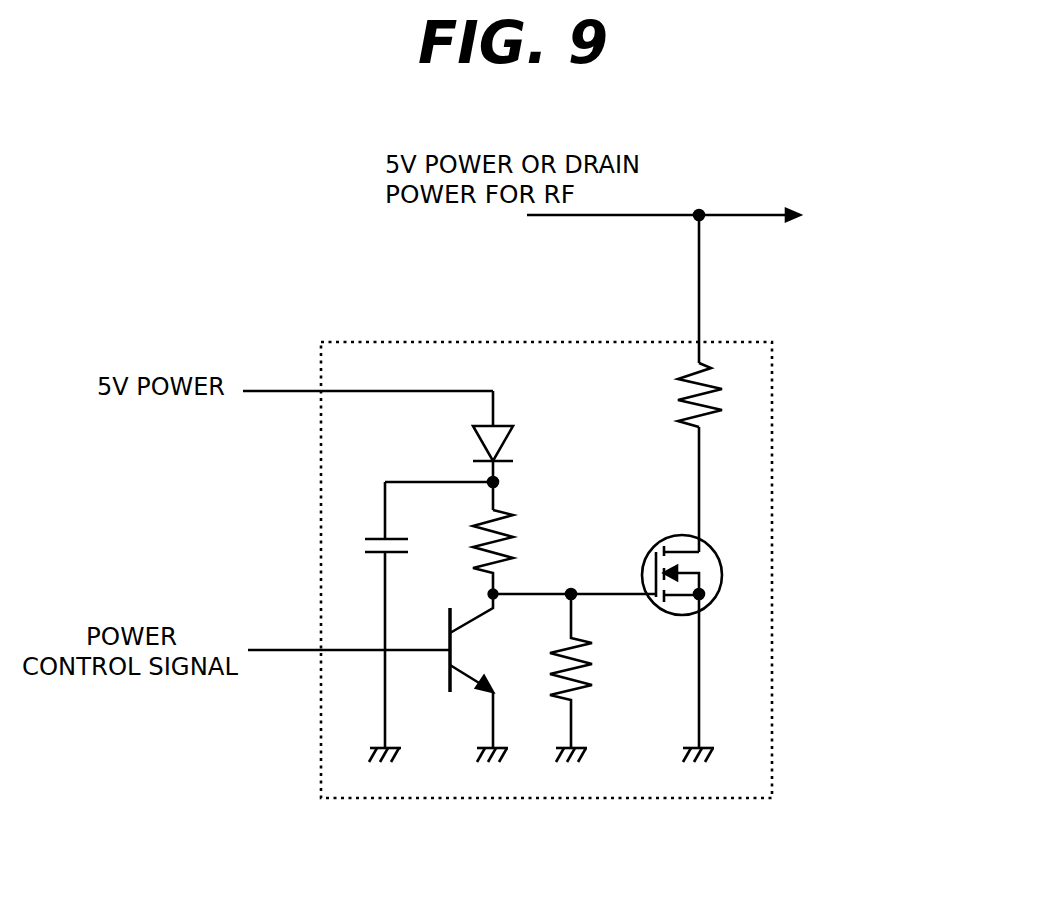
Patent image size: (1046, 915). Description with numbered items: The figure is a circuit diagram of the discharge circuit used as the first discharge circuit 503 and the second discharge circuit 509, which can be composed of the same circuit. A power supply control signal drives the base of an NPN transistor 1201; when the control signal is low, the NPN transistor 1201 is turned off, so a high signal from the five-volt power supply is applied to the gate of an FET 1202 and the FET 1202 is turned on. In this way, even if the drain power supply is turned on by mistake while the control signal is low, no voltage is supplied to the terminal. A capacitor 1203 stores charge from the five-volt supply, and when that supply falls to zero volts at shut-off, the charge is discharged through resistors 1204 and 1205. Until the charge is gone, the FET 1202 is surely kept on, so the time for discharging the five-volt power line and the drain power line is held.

The first discharge circuit 503 is at (619, 527).
The second discharge circuit 509 is at (827, 347).
The NPN transistor 1201 is at (466, 683).
The FET 1202 is at (722, 575).
The capacitor 1203 is at (356, 543).
The resistor 1204 is at (522, 535).
The resistor 1205 is at (586, 690).